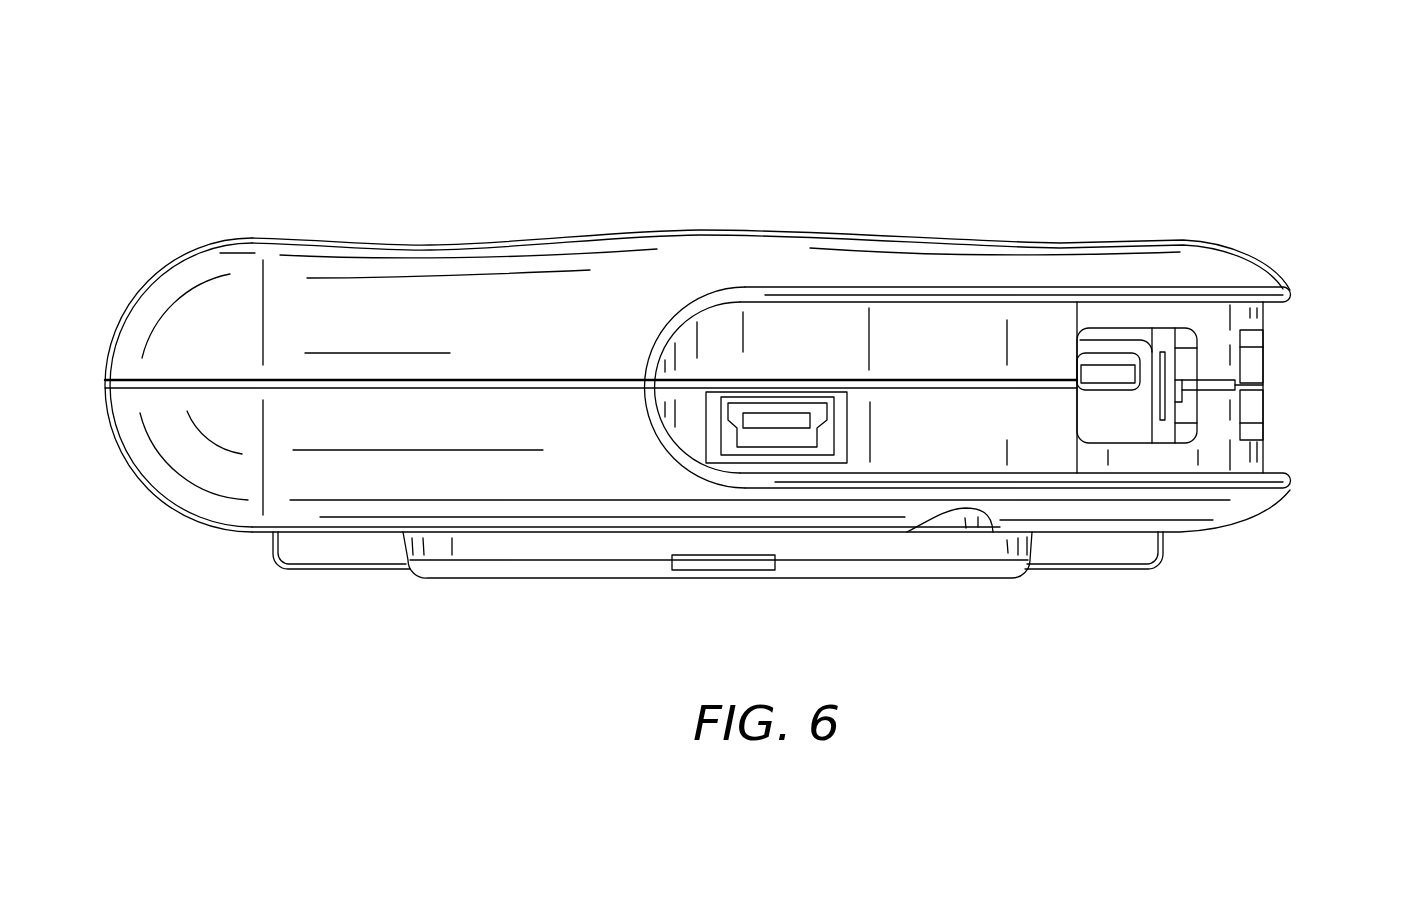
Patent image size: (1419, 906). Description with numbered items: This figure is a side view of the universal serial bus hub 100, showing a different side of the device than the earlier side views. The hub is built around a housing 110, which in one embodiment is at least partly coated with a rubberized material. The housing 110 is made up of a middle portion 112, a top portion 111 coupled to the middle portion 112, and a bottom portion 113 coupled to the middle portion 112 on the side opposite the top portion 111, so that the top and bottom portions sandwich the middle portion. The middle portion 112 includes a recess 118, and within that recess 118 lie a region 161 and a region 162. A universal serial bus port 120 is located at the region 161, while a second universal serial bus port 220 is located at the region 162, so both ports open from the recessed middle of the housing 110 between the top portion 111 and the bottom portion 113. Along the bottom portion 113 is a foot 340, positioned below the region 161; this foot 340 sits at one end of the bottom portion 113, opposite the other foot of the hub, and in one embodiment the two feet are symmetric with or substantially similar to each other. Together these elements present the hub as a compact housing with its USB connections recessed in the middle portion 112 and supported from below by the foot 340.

The universal serial bus hub 100 is at (307, 168).
The housing 110 is at (140, 512).
The top portion 111 is at (1263, 259).
The middle portion 112 is at (1302, 288).
The bottom portion 113 is at (1247, 502).
The recess 118 is at (970, 350).
The universal serial bus port 120 is at (773, 395).
The region 161 is at (1100, 222).
The region 162 is at (1277, 453).
The universal serial bus port 220 is at (1090, 422).
The foot 340 is at (492, 550).